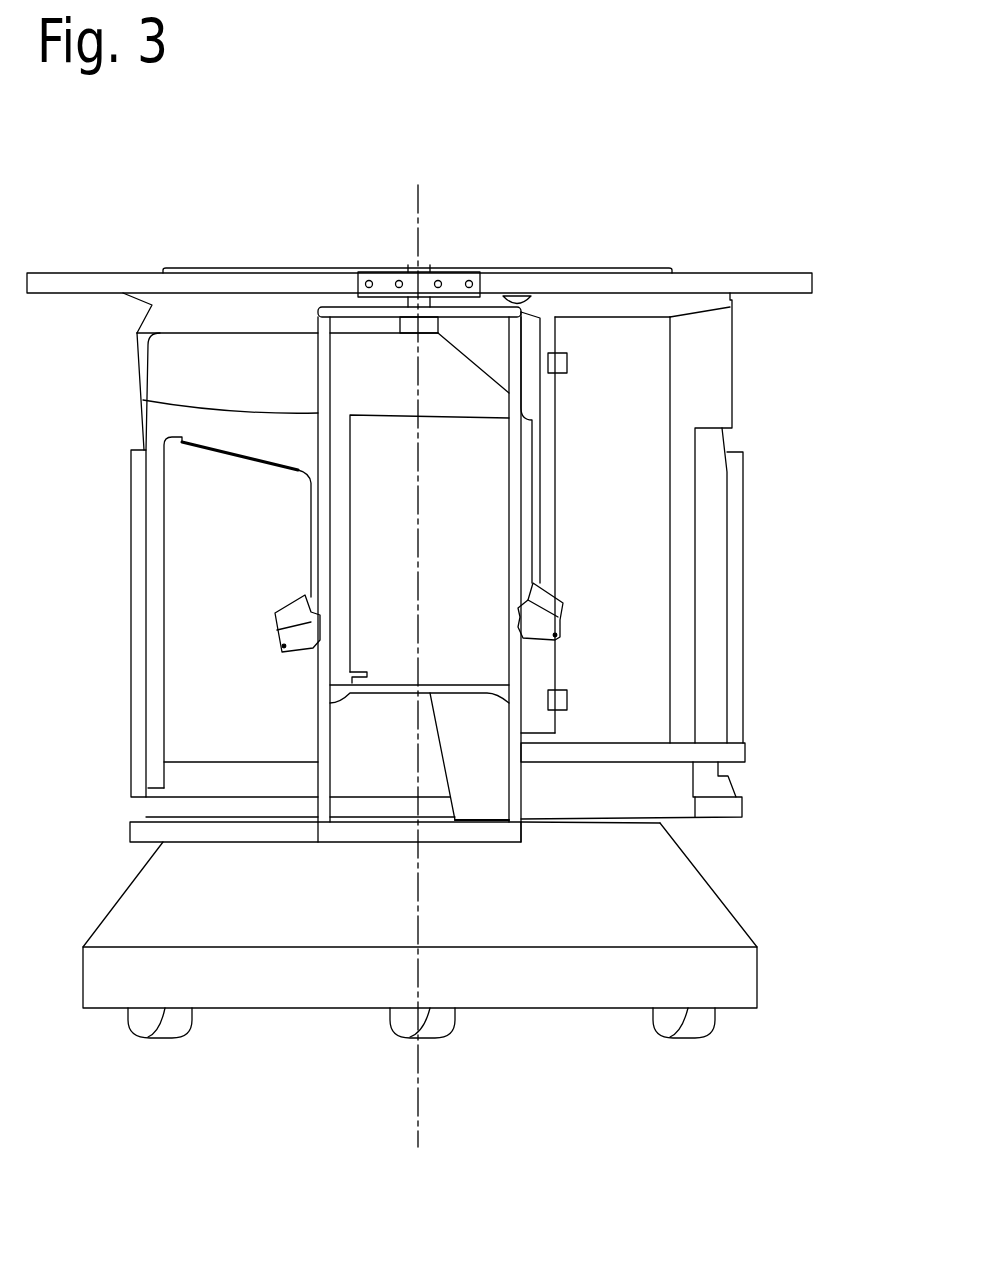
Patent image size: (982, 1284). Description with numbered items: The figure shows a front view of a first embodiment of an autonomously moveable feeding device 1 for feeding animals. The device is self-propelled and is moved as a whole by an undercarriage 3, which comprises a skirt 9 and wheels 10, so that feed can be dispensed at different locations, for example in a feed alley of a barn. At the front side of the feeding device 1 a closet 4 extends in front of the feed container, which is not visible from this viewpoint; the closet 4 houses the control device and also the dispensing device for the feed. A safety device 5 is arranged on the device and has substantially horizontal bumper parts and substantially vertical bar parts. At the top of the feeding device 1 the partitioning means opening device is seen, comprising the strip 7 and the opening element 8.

The autonomously moveable feeding device 1 is at (672, 222).
The undercarriage 3 is at (731, 889).
The closet 4 is at (207, 383).
The safety device 5 is at (318, 358).
The strip 7 is at (67, 292).
The opening element 8 is at (436, 270).
The skirt 9 is at (200, 895).
The wheels 10 is at (183, 1022).